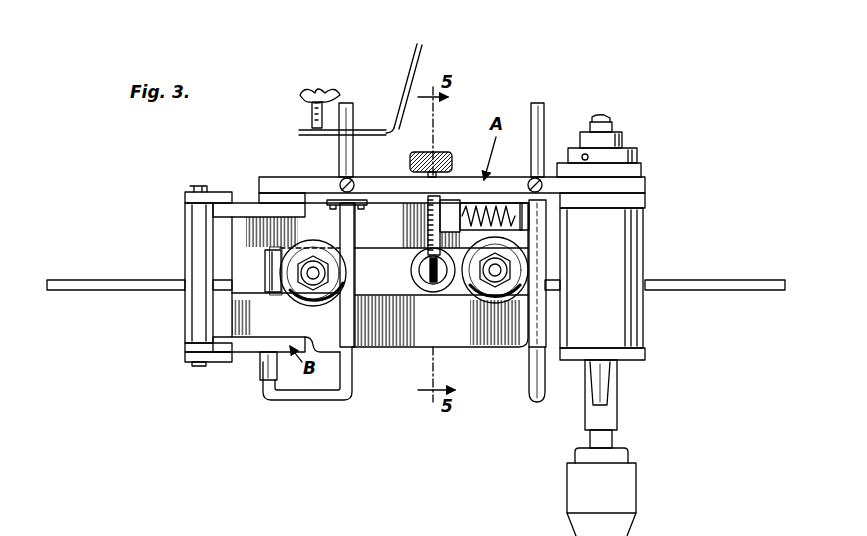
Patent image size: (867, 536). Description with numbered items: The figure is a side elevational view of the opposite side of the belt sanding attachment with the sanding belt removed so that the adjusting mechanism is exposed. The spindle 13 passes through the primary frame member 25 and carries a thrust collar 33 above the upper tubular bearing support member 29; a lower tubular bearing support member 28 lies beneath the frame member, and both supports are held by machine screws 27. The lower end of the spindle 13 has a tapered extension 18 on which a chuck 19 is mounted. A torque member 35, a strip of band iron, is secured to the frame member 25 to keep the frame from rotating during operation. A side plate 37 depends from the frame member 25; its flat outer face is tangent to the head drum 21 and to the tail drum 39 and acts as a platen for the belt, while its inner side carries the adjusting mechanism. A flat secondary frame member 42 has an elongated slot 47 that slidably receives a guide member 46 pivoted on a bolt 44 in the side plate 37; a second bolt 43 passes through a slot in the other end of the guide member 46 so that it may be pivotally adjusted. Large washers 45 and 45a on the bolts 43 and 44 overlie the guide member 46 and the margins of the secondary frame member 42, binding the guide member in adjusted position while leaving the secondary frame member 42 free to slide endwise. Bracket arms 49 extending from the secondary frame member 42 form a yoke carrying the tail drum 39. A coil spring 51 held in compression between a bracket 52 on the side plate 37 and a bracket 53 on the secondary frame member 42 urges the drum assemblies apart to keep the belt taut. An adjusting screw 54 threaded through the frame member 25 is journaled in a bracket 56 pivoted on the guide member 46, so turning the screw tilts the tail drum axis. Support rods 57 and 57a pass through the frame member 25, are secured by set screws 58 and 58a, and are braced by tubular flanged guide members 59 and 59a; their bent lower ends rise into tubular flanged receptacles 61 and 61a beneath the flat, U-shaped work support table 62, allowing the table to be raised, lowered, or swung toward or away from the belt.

The spindle 13 is at (610, 118).
The tapered extension 18 is at (608, 388).
The chuck 19 is at (632, 488).
The head drum 21 is at (646, 232).
The primary frame member 25 is at (318, 182).
The machine screws 27 is at (645, 158).
The lower tubular bearing support member 28 is at (648, 200).
The upper tubular bearing support member 29 is at (645, 168).
The thrust collar 33 is at (618, 136).
The torque member 35 is at (412, 62).
The side plate 37 is at (276, 256).
The tail drum 39 is at (190, 242).
The secondary frame member 42 is at (250, 216).
The second bolt 43 is at (492, 273).
The bolt 44 is at (300, 300).
The large washer 45 is at (296, 296).
The large washer 45a is at (490, 312).
The guide member 46 is at (381, 272).
The elongated slot 47 is at (267, 270).
The bracket arms 49 is at (222, 190).
The coil spring 51 is at (484, 203).
The bracket 52 is at (521, 202).
The bracket 53 is at (448, 210).
The adjusting screw 54 is at (440, 160).
The bracket 56 is at (432, 292).
The support rod 57 is at (352, 110).
The support rod 57a is at (540, 106).
The set screw 58 is at (352, 180).
The set screw 58a is at (540, 180).
The tubular flanged guide member 59 is at (350, 214).
The tubular flanged guide member 59a is at (546, 232).
The tubular flanged receptacle 61 is at (261, 372).
The tubular flanged receptacle 61a is at (530, 372).
The work support table 62 is at (102, 290).